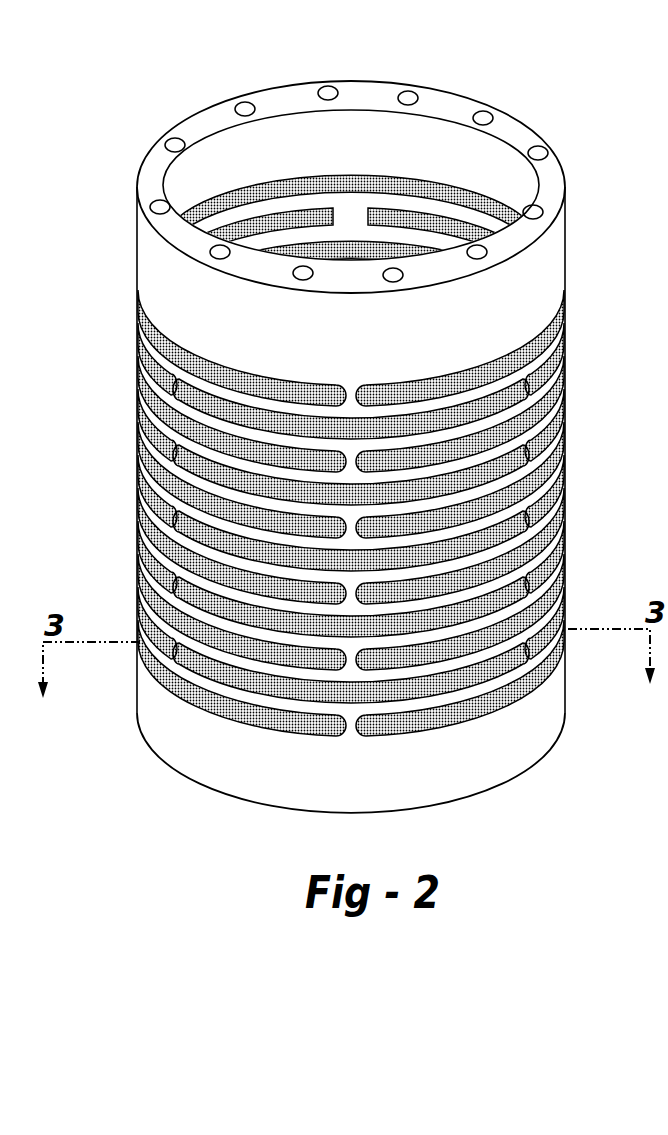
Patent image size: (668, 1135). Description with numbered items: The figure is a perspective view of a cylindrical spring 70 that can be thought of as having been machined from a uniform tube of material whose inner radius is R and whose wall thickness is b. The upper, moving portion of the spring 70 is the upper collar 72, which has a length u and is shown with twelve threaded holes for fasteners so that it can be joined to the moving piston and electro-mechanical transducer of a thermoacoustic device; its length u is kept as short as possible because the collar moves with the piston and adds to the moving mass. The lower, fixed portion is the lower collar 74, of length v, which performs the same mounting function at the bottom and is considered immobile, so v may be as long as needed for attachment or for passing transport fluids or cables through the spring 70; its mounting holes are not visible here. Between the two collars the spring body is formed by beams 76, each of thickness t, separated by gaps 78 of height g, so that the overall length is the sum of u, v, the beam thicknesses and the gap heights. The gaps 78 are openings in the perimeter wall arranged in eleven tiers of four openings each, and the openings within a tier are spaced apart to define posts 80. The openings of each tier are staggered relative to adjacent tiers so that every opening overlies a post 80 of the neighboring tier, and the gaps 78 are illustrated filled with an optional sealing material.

The spring 70 is at (589, 146).
The upper collar 72 is at (150, 270).
The lower collar 74 is at (150, 705).
The beams 76 is at (563, 482).
The gaps 78 is at (565, 373).
The posts 80 is at (173, 657).
The wall thickness b is at (458, 173).
The inner radius R is at (426, 120).
The upper collar length u is at (572, 178).
The lower collar length v is at (572, 637).
The gap height g is at (92, 377).
The beam thickness t is at (96, 533).